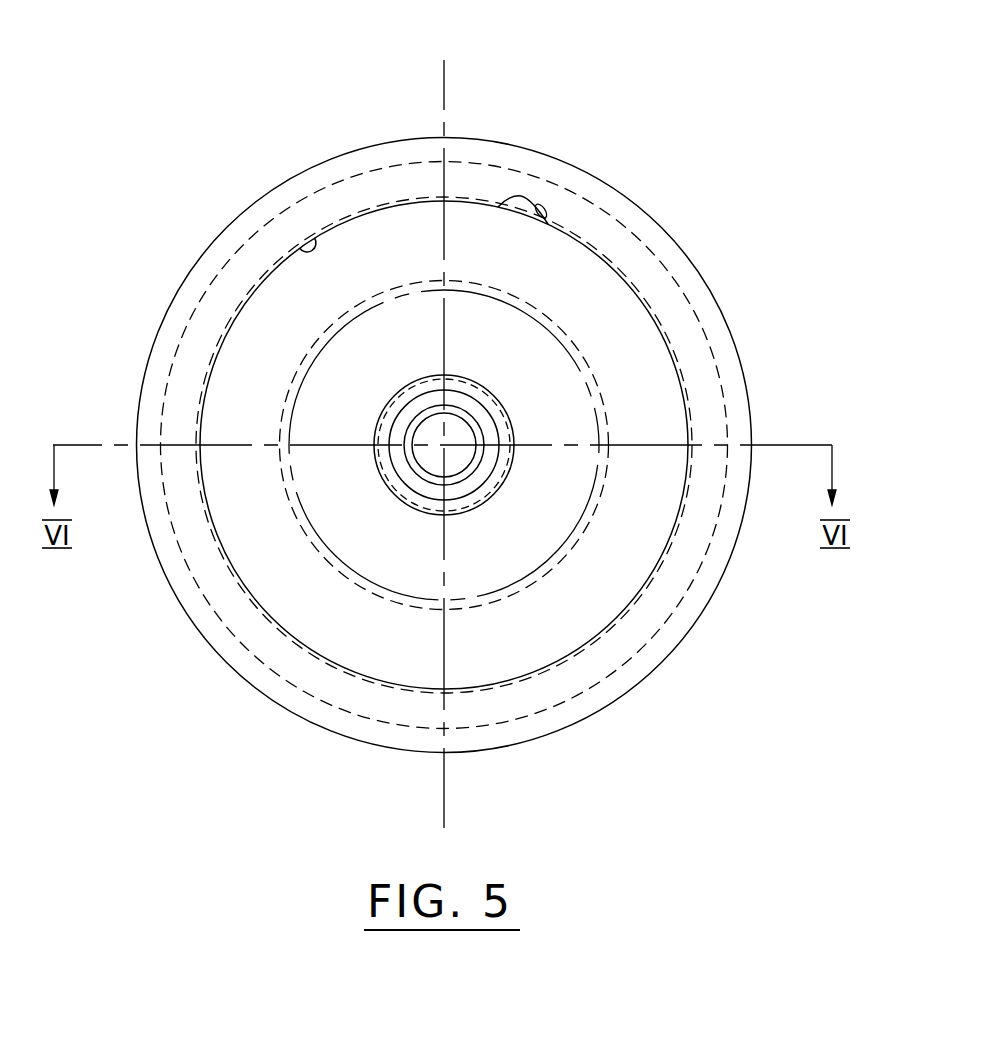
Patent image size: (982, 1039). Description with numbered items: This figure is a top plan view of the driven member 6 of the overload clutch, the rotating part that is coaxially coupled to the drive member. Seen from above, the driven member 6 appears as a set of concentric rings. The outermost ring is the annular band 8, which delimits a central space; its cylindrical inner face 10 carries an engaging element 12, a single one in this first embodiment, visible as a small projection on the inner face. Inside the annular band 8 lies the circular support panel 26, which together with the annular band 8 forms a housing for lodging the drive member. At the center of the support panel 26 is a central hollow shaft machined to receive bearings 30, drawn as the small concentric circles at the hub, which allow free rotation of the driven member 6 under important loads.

The driven member 6 is at (692, 172).
The annular band 8 is at (233, 282).
The cylindrical inner face 10 is at (320, 236).
The engaging element 12 is at (552, 217).
The circular support panel 26 is at (637, 318).
The bearings 30 is at (410, 465).